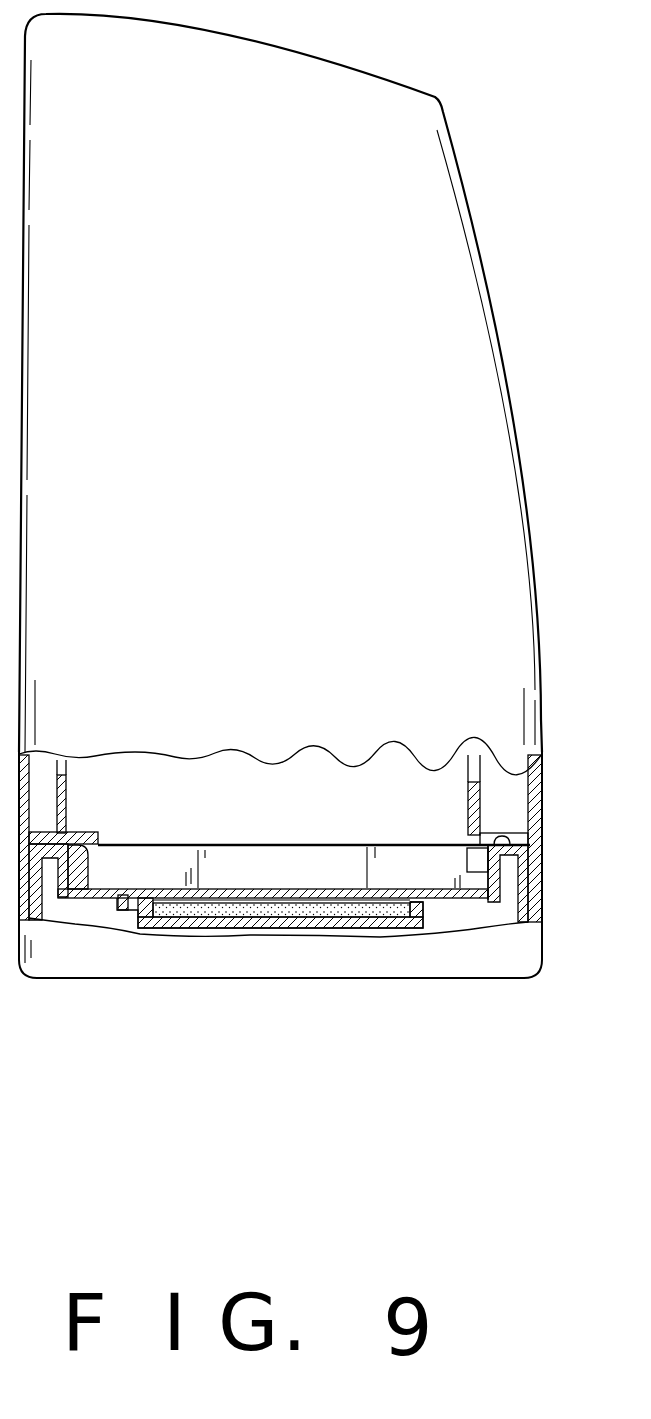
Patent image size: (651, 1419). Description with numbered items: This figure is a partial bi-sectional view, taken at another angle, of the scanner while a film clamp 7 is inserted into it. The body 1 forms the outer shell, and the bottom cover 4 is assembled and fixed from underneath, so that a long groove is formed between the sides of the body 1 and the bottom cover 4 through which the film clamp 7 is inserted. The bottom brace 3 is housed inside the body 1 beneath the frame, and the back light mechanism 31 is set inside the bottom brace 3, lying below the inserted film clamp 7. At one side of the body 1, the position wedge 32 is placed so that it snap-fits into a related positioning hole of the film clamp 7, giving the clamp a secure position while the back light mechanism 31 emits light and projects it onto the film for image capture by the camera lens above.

The body 1 is at (488, 378).
The bottom brace 3 is at (66, 897).
The bottom cover 4 is at (402, 963).
The film clamp 7 is at (269, 860).
The back light mechanism 31 is at (228, 910).
The position wedge 32 is at (482, 882).